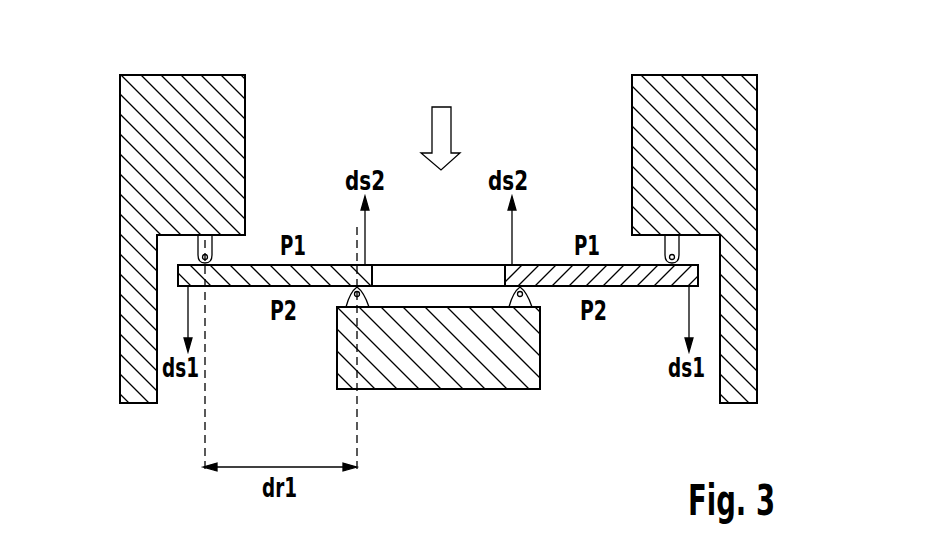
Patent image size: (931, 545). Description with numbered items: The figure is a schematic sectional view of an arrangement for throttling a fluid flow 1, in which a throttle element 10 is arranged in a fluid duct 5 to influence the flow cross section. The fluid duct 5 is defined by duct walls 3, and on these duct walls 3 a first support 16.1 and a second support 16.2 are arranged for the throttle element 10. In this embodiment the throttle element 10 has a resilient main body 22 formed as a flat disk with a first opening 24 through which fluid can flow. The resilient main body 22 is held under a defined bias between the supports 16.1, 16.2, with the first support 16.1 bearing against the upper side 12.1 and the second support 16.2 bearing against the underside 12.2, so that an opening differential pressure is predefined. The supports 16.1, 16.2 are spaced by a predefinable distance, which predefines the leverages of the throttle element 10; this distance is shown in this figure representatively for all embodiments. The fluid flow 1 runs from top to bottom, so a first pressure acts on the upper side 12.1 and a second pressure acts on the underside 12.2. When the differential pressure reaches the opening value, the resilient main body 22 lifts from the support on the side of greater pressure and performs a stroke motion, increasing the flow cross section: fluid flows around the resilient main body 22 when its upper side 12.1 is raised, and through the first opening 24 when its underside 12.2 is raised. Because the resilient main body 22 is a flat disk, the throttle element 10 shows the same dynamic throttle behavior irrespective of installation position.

The fluid flow 1 is at (441, 118).
The duct walls 3 is at (138, 172).
The fluid duct 5 is at (295, 108).
The throttle element 10 is at (531, 89).
The upper side 12.1 is at (265, 265).
The underside 12.2 is at (262, 286).
The first support 16.1 is at (204, 248).
The second support 16.2 is at (350, 293).
The resilient main body 22 is at (318, 264).
The first opening 24 is at (450, 282).